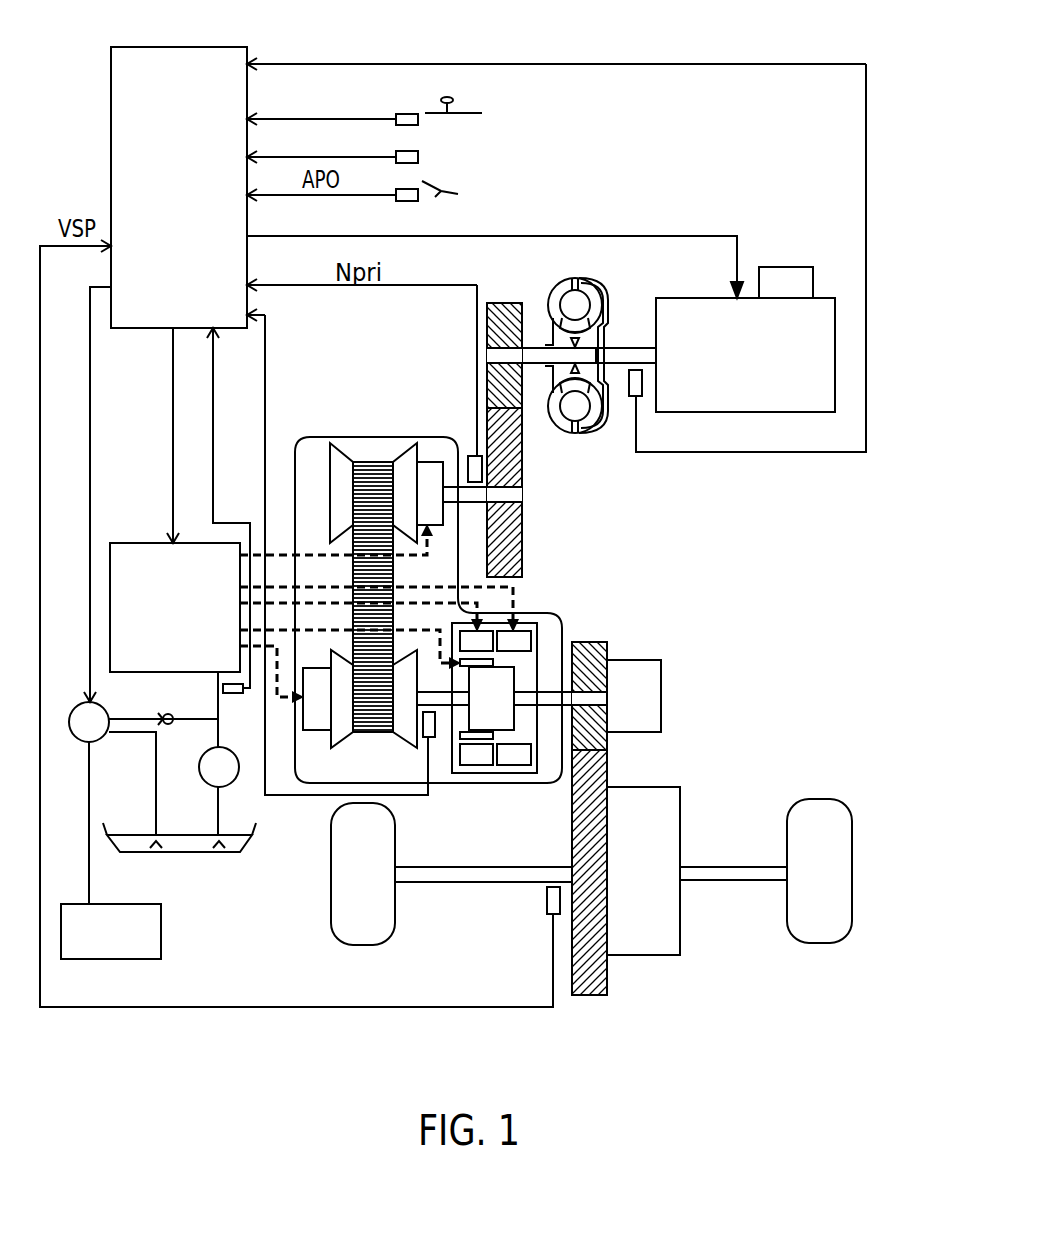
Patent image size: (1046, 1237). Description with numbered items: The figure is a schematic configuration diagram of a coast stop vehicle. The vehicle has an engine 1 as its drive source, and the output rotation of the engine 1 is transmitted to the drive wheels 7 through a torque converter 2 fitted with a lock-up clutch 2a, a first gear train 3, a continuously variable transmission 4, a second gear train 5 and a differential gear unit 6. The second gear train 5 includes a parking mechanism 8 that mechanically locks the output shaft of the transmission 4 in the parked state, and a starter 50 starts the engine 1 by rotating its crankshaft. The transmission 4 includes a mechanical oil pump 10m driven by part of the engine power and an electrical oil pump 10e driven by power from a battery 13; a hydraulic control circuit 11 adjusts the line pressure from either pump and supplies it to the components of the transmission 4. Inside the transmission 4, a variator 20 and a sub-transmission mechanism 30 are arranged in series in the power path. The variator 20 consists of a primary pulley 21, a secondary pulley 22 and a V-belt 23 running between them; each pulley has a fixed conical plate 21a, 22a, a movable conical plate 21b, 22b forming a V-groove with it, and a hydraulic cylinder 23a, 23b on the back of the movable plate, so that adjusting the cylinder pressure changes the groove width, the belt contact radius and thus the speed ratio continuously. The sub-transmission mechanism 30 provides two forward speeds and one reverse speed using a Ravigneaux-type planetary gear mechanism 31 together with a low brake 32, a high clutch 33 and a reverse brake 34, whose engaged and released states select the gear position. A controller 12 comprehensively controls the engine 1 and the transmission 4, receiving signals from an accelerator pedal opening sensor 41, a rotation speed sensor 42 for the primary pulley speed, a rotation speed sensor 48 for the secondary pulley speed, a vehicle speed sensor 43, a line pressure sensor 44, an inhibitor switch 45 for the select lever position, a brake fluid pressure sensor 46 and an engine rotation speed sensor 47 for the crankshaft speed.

The engine 1 is at (812, 303).
The torque converter 2 is at (597, 300).
The lock-up clutch 2a is at (602, 333).
The first gear train 3 is at (502, 296).
The transmission 4 is at (448, 436).
The second gear train 5 is at (598, 1006).
The differential gear unit 6 is at (645, 942).
The drive wheels 7 is at (362, 935).
The parking mechanism 8 is at (647, 687).
The electrical oil pump 10e is at (92, 738).
The mechanical oil pump 10m is at (210, 783).
The hydraulic control circuit 11 is at (130, 548).
The controller 12 is at (237, 55).
The battery 13 is at (152, 945).
The variator 20 is at (383, 599).
The primary pulley 21 is at (390, 447).
The fixed conical plate 21a is at (340, 462).
The movable conical plate 21b is at (403, 465).
The secondary pulley 22 is at (378, 750).
The fixed conical plate 22a is at (402, 727).
The movable conical plate 22b is at (343, 730).
The V-belt 23 is at (375, 460).
The hydraulic cylinder 23a is at (422, 487).
The hydraulic cylinder 23b is at (312, 720).
The sub-transmission mechanism 30 is at (544, 673).
The Ravigneaux-type planetary gear mechanism 31 is at (495, 692).
The low brake 32 is at (480, 643).
The high clutch 33 is at (475, 735).
The reverse brake 34 is at (515, 641).
The accelerator pedal opening sensor 41 is at (405, 200).
The rotation speed sensor 42 is at (472, 456).
The vehicle speed sensor 43 is at (547, 898).
The line pressure sensor 44 is at (235, 692).
The inhibitor switch 45 is at (408, 116).
The brake fluid pressure sensor 46 is at (402, 160).
The engine rotation speed sensor 47 is at (630, 398).
The rotation speed sensor 48 is at (431, 738).
The starter 50 is at (770, 272).